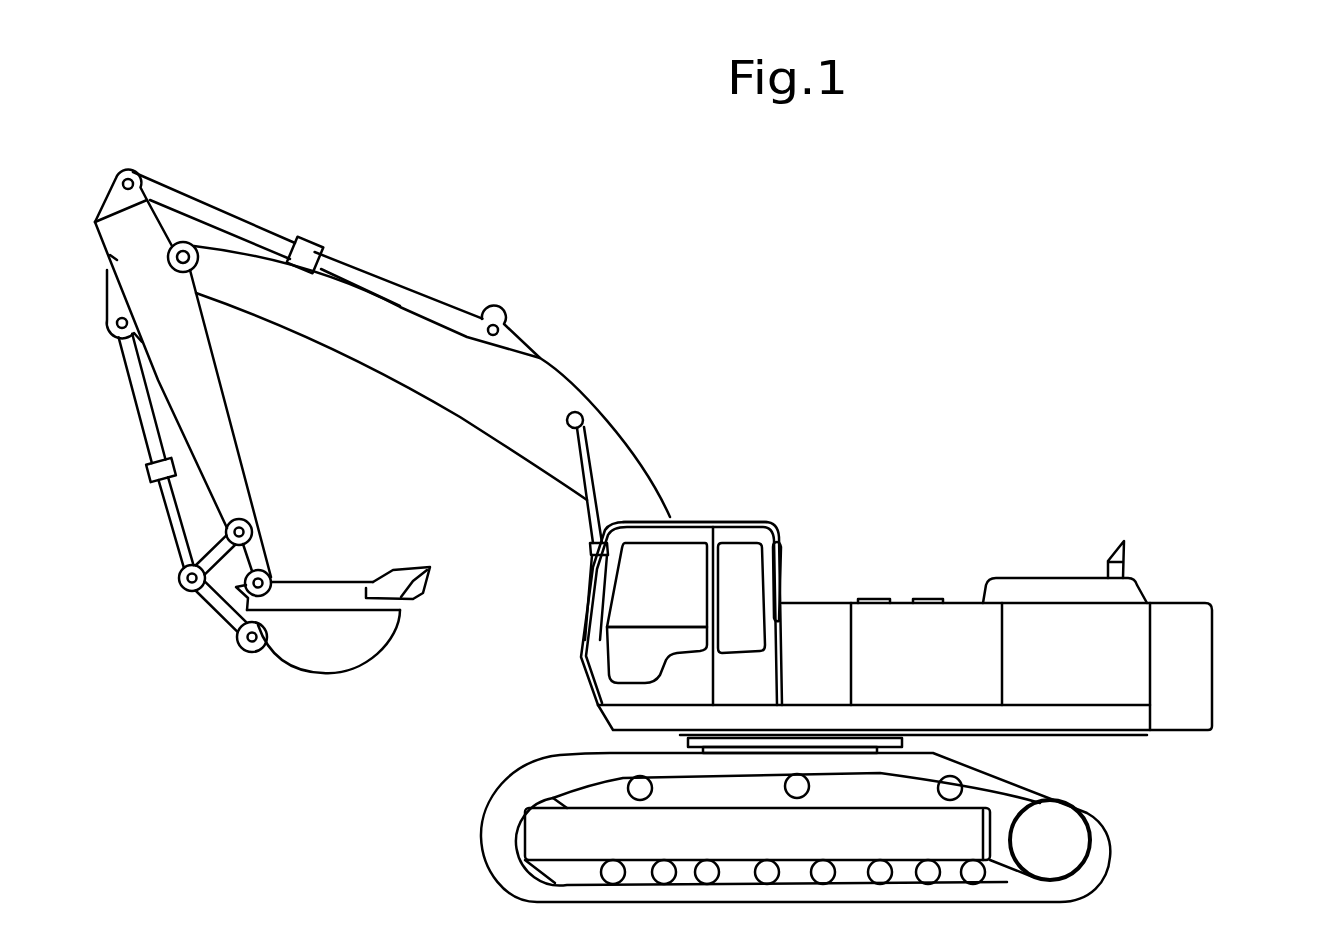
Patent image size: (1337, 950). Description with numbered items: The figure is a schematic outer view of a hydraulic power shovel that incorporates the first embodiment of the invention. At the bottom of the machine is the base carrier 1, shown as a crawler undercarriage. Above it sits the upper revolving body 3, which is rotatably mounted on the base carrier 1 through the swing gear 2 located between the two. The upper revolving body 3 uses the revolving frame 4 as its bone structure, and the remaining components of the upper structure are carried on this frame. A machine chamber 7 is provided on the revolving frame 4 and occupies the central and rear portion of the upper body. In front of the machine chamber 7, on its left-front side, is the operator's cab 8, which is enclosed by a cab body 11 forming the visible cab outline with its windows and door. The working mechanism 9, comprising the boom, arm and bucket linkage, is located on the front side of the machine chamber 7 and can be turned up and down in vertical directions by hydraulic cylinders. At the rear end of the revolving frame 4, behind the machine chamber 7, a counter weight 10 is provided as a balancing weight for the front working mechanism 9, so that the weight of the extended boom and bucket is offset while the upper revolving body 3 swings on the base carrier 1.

The base carrier 1 is at (1113, 833).
The swing gear 2 is at (690, 742).
The upper revolving body 3 is at (874, 587).
The revolving frame 4 is at (1095, 713).
The machine chamber 7 is at (1040, 643).
The operator's cab 8 is at (722, 545).
The working mechanism 9 is at (550, 403).
The counter weight 10 is at (1195, 638).
The cab body 11 is at (733, 535).